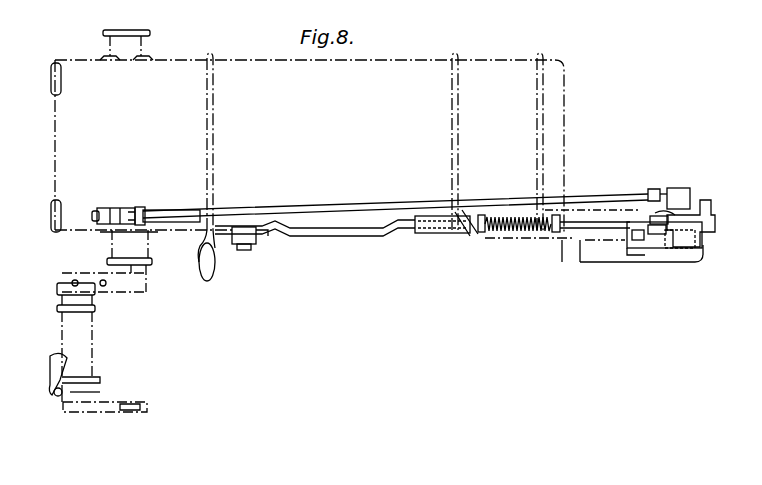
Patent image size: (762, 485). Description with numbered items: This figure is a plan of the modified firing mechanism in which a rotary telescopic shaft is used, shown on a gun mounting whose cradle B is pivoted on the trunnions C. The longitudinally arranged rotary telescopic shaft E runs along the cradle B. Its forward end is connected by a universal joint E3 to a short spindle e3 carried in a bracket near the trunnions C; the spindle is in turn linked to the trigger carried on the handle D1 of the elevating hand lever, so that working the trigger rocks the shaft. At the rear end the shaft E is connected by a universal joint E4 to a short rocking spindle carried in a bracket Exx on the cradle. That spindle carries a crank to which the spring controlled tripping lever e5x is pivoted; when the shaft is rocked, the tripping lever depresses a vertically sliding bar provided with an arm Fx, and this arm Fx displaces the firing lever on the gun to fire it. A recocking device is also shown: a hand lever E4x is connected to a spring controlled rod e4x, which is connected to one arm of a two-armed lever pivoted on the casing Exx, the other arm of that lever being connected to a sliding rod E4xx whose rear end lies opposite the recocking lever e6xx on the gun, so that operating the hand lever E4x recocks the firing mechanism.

The cradle B is at (307, 142).
The trunnions C is at (135, 38).
The handle of the elevating hand lever D1 is at (85, 348).
The rotary telescopic shaft E is at (346, 210).
The short spindle e3 is at (131, 208).
The universal joint E3 is at (148, 209).
The hand lever E4x is at (223, 242).
The spring controlled rod e4x is at (405, 221).
The bracket Exx is at (650, 192).
The universal joint E4 is at (672, 190).
The arm Fx is at (705, 202).
The tripping lever e5x is at (660, 214).
The recocking lever e6xx is at (697, 238).
The sliding rod E4xx is at (665, 248).